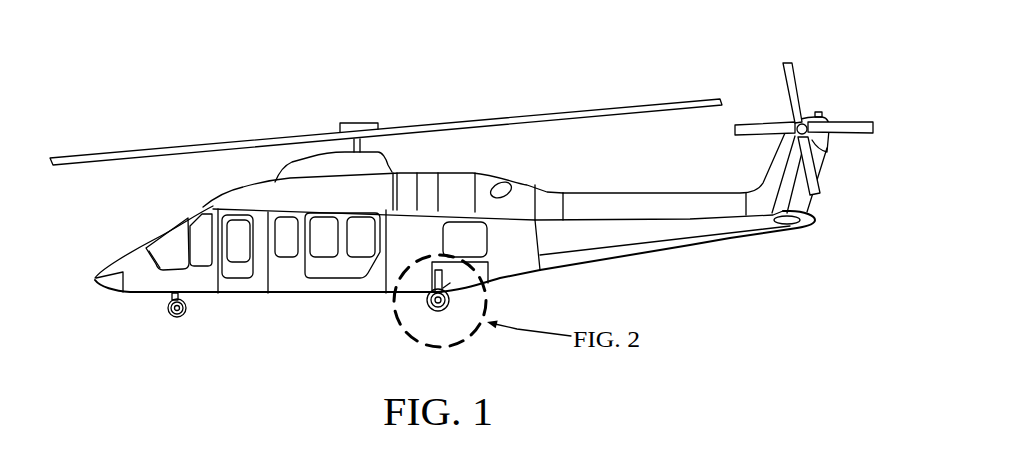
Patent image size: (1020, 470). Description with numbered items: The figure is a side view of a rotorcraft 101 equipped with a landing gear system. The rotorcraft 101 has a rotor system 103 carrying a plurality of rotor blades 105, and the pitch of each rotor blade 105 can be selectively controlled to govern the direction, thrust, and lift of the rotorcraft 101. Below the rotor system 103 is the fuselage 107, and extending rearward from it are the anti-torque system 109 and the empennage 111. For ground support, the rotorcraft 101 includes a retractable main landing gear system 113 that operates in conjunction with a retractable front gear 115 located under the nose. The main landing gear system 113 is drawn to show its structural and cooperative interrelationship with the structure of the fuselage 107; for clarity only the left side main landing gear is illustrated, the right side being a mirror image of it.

The rotorcraft 101 is at (245, 68).
The rotor system 103 is at (370, 103).
The rotor blade 105 is at (191, 146).
The fuselage 107 is at (284, 295).
The anti-torque system 109 is at (828, 92).
The empennage 111 is at (672, 251).
The retractable main landing gear system 113 is at (418, 320).
The retractable front gear 115 is at (172, 316).